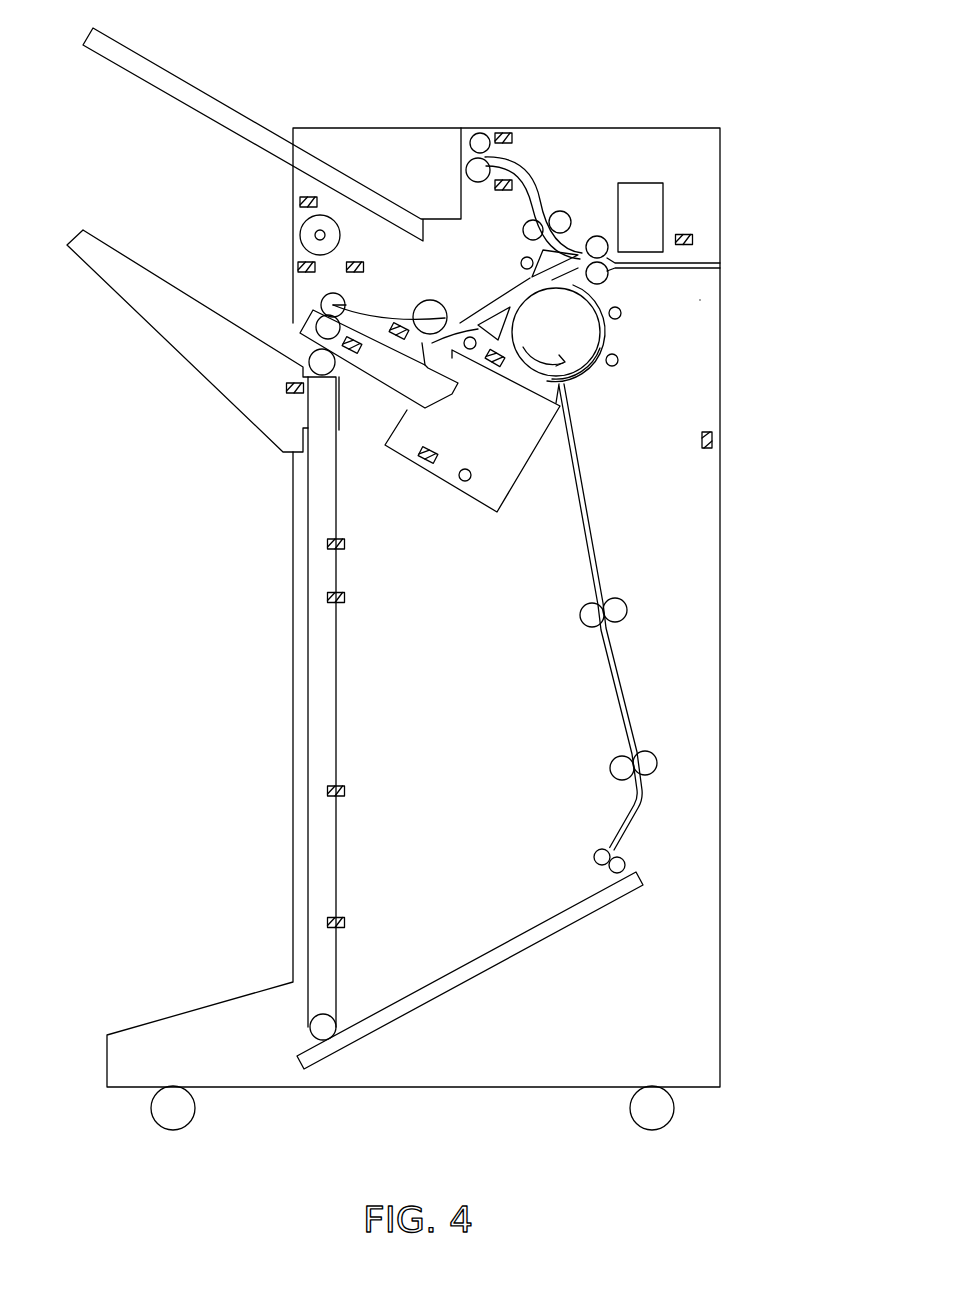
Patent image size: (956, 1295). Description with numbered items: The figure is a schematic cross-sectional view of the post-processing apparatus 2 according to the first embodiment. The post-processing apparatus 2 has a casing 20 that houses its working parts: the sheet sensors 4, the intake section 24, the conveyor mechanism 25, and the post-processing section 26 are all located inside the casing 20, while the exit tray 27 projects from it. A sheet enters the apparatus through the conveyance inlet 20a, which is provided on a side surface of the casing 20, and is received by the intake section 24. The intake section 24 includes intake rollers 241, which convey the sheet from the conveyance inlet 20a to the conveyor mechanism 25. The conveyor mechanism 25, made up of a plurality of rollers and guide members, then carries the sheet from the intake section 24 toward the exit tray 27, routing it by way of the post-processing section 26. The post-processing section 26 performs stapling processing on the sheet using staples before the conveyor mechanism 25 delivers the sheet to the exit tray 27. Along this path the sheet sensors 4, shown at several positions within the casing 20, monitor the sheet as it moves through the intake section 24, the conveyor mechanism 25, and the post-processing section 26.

The post-processing apparatus 2 is at (683, 107).
The sheet sensors 4 is at (287, 388).
The casing 20 is at (292, 718).
The conveyance inlet 20a is at (734, 258).
The intake section 24 is at (702, 301).
The intake rollers 241 is at (597, 244).
The conveyor mechanism 25 is at (594, 384).
The post-processing section 26 is at (663, 197).
The exit tray 27 is at (160, 275).